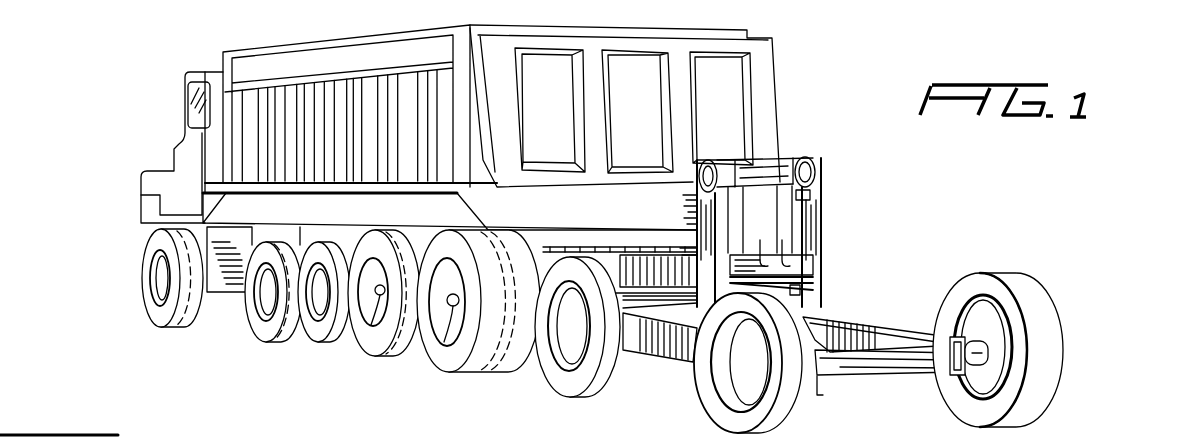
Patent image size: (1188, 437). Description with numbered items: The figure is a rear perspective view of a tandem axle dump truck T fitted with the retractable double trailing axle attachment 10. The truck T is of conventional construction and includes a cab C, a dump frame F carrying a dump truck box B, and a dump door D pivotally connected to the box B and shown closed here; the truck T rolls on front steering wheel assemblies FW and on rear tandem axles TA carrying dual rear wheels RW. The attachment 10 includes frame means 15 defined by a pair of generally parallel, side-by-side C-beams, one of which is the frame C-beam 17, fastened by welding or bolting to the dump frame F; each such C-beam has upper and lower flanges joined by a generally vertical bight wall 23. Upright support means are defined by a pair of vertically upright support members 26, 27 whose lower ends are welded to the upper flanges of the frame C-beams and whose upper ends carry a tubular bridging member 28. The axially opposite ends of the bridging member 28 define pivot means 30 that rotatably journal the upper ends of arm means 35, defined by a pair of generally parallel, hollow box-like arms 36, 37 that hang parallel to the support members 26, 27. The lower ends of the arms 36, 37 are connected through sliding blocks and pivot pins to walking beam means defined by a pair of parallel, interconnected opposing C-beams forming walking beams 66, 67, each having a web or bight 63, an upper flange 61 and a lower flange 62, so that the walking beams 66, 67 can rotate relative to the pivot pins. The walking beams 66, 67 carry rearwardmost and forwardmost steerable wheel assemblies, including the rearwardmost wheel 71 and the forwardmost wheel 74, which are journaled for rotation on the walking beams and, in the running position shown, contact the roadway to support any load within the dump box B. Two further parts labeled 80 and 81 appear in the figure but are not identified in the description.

The retractable double trailing axle attachment 10 is at (918, 222).
The frame means 15 is at (633, 248).
The frame C-beam 17 is at (605, 255).
The bight wall 23 is at (608, 285).
The vertically upright support member 26 is at (807, 190).
The vertically upright support member 27 is at (745, 165).
The tubular bridging member 28 is at (790, 165).
The pivot means 30 is at (703, 170).
The arm means 35 is at (823, 225).
The arm 36 is at (697, 230).
The arm 37 is at (697, 202).
The upper flange 61 is at (907, 337).
The lower flange 62 is at (818, 381).
The web 63 is at (843, 340).
The walking beam 66 is at (883, 323).
The walking beam 67 is at (640, 340).
The rearwardmost steerable wheel assembly 71 is at (1052, 358).
The forwardmost steerable wheel assembly 74 is at (563, 387).
The latch 80 is at (803, 290).
The latch housing 81 is at (800, 265).
The cab C is at (180, 143).
The front steering wheels FW is at (142, 249).
The dump truck box B is at (306, 77).
The dump door D is at (551, 109).
The dump frame F is at (343, 236).
The tandem axle dump truck T is at (783, 70).
The rear tandem axles TA is at (353, 340).
The dual rear wheels RW is at (378, 343).